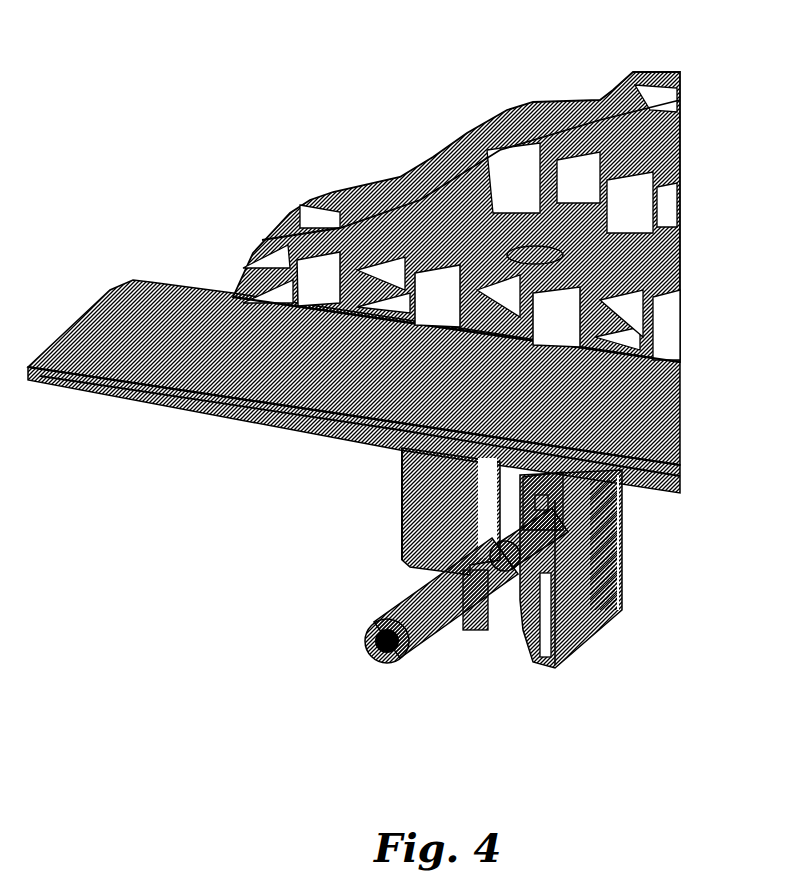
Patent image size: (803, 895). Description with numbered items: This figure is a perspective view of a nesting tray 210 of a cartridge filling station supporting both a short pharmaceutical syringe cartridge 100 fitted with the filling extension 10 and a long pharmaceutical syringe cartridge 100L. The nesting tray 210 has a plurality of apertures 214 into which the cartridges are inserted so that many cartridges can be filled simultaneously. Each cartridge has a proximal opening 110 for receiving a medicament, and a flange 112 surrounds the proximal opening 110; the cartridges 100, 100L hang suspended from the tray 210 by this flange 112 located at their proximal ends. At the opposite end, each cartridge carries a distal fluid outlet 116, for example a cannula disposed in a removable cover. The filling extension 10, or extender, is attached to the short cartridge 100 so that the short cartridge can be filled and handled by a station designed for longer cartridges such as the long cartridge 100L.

The nesting tray 210 is at (349, 335).
The proximal opening 110 is at (488, 203).
The aperture 214 is at (317, 230).
The flange 112 is at (535, 255).
The short pharmaceutical syringe cartridge 100 is at (635, 490).
The long pharmaceutical syringe cartridge 100L is at (440, 497).
The filling extension 10 is at (580, 605).
The distal fluid outlet 116 is at (413, 585).